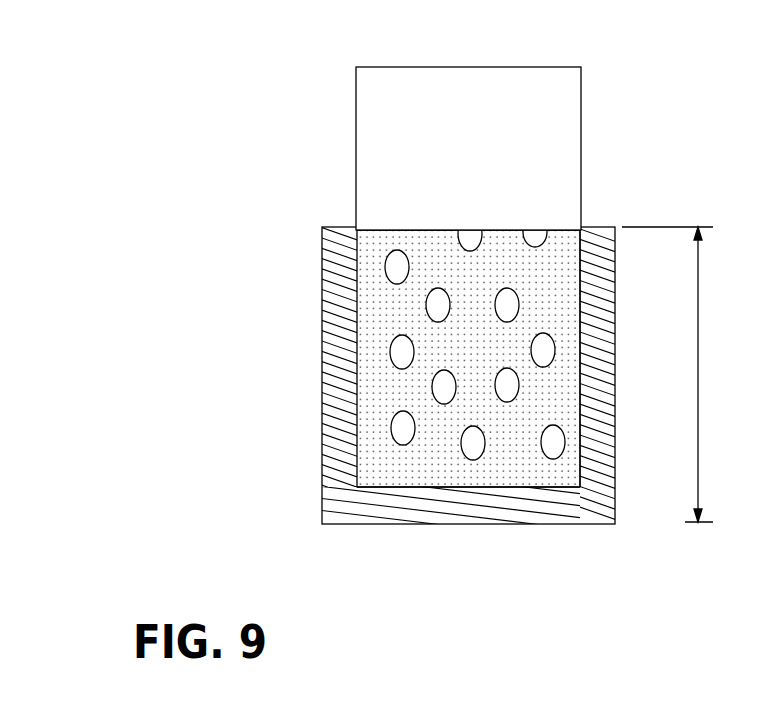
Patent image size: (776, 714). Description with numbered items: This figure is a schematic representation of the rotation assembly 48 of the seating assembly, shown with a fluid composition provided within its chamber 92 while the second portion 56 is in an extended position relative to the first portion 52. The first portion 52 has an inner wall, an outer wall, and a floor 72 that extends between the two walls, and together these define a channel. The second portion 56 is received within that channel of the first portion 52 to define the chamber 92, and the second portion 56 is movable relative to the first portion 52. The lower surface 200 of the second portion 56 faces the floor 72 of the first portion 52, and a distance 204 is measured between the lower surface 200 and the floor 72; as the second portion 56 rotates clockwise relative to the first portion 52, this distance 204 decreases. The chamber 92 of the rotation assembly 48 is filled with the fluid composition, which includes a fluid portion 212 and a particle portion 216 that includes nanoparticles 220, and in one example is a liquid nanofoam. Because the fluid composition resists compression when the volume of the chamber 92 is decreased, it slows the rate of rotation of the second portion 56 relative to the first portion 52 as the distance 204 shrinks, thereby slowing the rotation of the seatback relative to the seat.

The rotation assembly 48 is at (275, 193).
The first portion 52 is at (332, 297).
The second portion 56 is at (356, 90).
The floor 72 is at (513, 500).
The chamber 92 is at (367, 470).
The lower surface 200 is at (399, 311).
The distance 204 is at (698, 333).
The fluid portion 212 is at (567, 267).
The particle portion 216 is at (442, 392).
The nanoparticles 220 is at (412, 242).